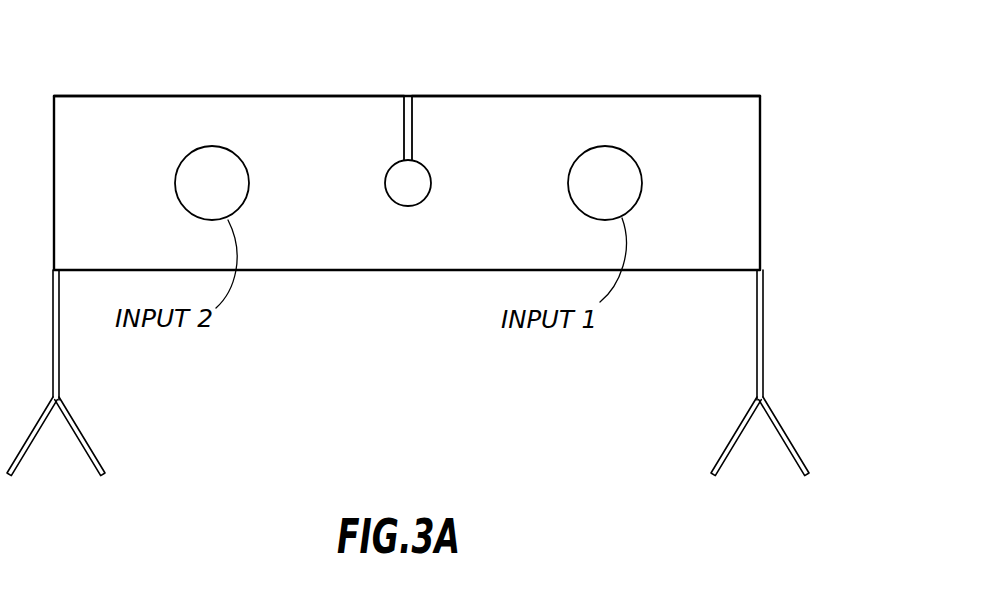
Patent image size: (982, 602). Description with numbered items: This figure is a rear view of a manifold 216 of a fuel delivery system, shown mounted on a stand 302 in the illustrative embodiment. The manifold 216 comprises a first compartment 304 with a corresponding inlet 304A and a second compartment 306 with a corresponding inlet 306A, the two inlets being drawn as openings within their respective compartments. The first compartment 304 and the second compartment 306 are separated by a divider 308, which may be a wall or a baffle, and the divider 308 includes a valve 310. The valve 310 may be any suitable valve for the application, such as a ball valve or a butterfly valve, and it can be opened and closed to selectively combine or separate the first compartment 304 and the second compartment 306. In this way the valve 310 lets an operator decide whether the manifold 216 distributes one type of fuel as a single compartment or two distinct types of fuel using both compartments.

The manifold 216 is at (784, 70).
The stand 302 is at (763, 326).
The first compartment 304 is at (522, 115).
The inlet 304A is at (603, 146).
The second compartment 306 is at (252, 118).
The inlet 306A is at (197, 146).
The divider 308 is at (403, 115).
The valve 310 is at (423, 167).